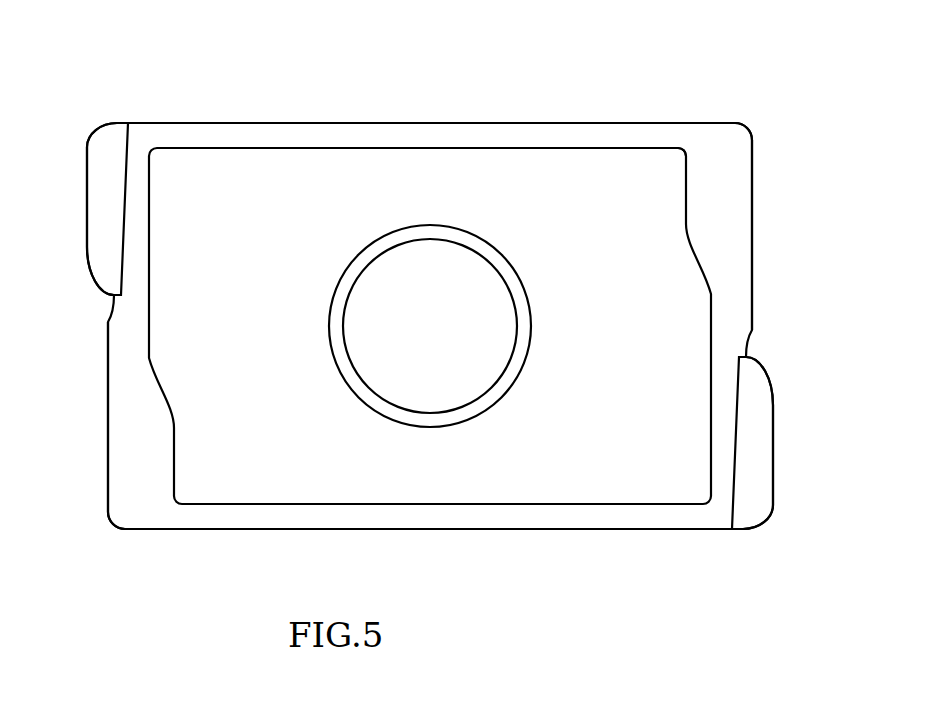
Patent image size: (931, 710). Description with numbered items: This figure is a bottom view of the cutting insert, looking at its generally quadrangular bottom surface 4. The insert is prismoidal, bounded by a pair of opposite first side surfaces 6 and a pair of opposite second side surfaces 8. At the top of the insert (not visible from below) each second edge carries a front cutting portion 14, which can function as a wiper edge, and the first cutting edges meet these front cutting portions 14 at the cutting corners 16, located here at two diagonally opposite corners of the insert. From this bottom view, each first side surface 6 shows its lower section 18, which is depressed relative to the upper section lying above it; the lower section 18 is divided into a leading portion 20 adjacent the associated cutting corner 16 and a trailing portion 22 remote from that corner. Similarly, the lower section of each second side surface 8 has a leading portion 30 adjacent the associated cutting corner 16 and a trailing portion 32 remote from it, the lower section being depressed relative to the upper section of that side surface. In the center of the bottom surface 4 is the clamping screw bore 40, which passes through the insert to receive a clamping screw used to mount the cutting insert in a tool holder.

The bottom surface 4 is at (578, 327).
The first side surface 6 is at (478, 531).
The second side surface 8 is at (104, 400).
The front cutting portion 14 is at (86, 192).
The cutting corner 16 is at (86, 148).
The lower section 18 is at (553, 515).
The leading portion 20 is at (191, 122).
The trailing portion 22 is at (583, 120).
The leading portion 30 is at (138, 238).
The trailing portion 32 is at (138, 472).
The clamping screw bore 40 is at (413, 338).